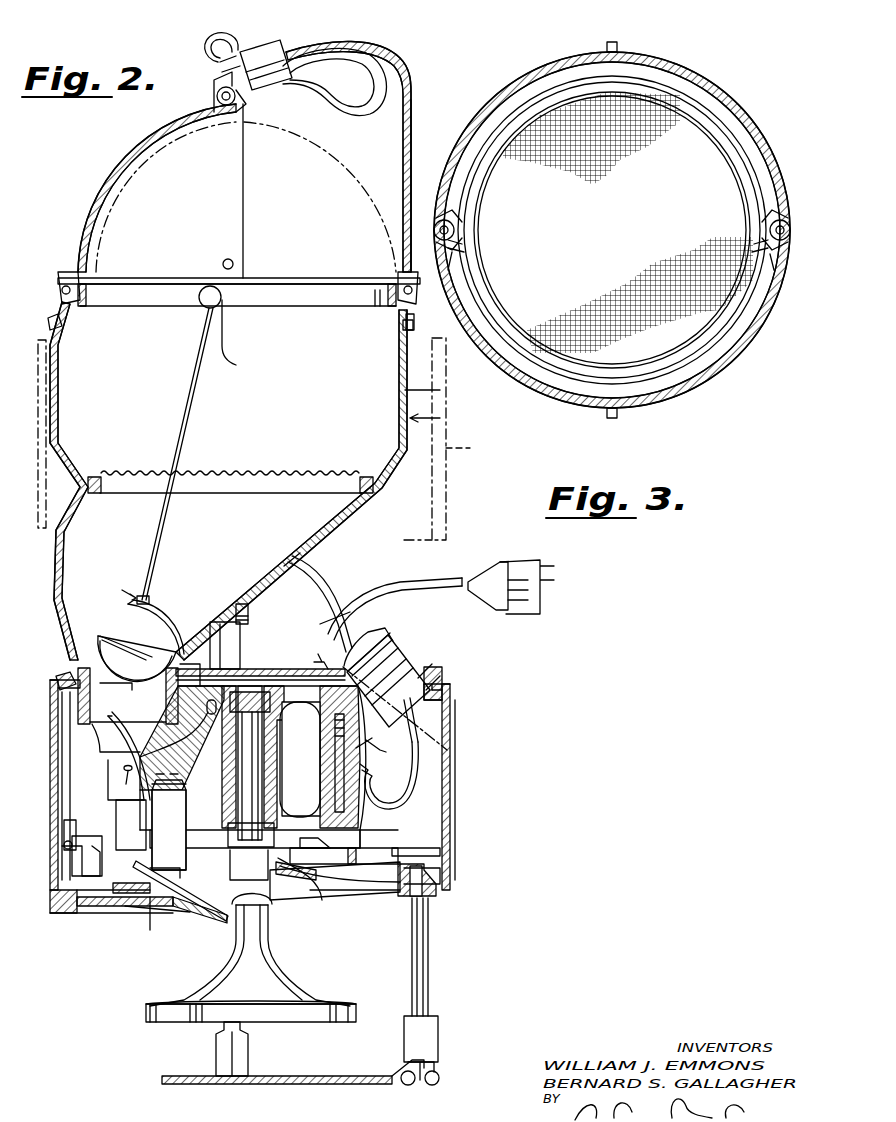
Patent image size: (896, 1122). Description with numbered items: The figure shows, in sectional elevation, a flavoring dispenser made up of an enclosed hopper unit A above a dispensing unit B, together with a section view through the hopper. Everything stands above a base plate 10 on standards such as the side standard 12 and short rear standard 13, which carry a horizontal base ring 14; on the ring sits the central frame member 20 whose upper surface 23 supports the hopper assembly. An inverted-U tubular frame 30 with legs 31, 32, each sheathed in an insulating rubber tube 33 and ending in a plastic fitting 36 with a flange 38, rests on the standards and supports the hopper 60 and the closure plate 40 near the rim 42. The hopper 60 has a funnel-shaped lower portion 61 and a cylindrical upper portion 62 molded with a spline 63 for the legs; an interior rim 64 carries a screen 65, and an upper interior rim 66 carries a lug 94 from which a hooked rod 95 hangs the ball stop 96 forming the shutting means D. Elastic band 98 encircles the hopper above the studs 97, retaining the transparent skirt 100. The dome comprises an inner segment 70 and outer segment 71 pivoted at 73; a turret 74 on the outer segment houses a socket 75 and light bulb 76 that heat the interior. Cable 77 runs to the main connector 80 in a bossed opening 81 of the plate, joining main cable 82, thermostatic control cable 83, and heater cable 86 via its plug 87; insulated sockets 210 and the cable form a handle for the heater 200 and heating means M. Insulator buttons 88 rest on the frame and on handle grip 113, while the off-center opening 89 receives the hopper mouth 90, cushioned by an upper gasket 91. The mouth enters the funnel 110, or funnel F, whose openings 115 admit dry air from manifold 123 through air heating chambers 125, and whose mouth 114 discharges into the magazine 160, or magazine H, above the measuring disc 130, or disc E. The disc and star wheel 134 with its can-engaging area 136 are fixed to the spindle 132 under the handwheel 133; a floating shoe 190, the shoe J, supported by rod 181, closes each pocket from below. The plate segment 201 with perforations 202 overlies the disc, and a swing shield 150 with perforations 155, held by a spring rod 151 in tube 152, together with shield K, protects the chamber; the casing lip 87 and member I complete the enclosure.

In FIG. 2, the base plate 10 is at (292, 1086).
In FIG. 2, the standard 12 is at (250, 1050).
In FIG. 2, the rear standard 13 is at (428, 988).
In FIG. 2, the base ring 14 is at (444, 888).
In FIG. 2, the central frame member 20 is at (330, 708).
In FIG. 2, the upper surface 23 is at (298, 672).
In FIG. 2, the tubular hopper frame 30 is at (216, 96).
In FIG. 3, the leg 31 is at (766, 222).
In FIG. 2, the leg 32 is at (250, 610).
In FIG. 3, the leg 32 is at (460, 230).
In FIG. 2, the insulating rubber tube 33 is at (250, 620).
In FIG. 3, the insulating rubber tube 33 is at (470, 246).
In FIG. 2, the plastic fitting 36 is at (242, 640).
In FIG. 2, the flange 38 is at (248, 670).
In FIG. 2, the closure plate 40 is at (420, 672).
In FIG. 2, the casing rim 42 is at (438, 684).
In FIG. 2, the hopper 60 is at (255, 439).
In FIG. 3, the hopper 60 is at (548, 60).
In FIG. 2, the funnel-shaped portion 61 is at (312, 548).
In FIG. 3, the funnel-shaped portion 61 is at (732, 86).
In FIG. 2, the cylindrical portion 62 is at (398, 364).
In FIG. 3, the recess or spline 63 is at (611, 265).
In FIG. 2, the rim 64 is at (96, 494).
In FIG. 3, the rim 64 is at (735, 150).
In FIG. 2, the screen 65 is at (282, 474).
In FIG. 3, the screen 65 is at (648, 215).
In FIG. 2, the upper interior rim 66 is at (338, 296).
In FIG. 2, the inner segment 70 is at (88, 184).
In FIG. 2, the outer segment 71 is at (412, 78).
In FIG. 2, the pivot 73 is at (234, 262).
In FIG. 2, the turret 74 is at (365, 45).
In FIG. 2, the electrical socket 75 is at (270, 48).
In FIG. 2, the light bulb 76 is at (348, 114).
In FIG. 2, the electric cable 77 is at (222, 34).
In FIG. 2, the main electrical connector 80 is at (394, 658).
In FIG. 2, the bossed opening 81 is at (380, 634).
In FIG. 2, the main cable 82 is at (420, 574).
In FIG. 2, the thermostatic control cable 83 is at (322, 630).
In FIG. 2, the heater cable 86 is at (446, 768).
In FIG. 2, the plug 87 is at (446, 712).
In FIG. 2, the insulator buttons 88 is at (328, 666).
In FIG. 2, the off-center opening 89 is at (92, 698).
In FIG. 2, the mouth 90 is at (116, 738).
In FIG. 2, the upper gasket 91 is at (66, 674).
In FIG. 2, the lug 94 is at (230, 296).
In FIG. 2, the hooked rod 95 is at (186, 384).
In FIG. 2, the ball stop 96 is at (166, 612).
In FIG. 2, the studs 97 is at (427, 324).
In FIG. 3, the studs 97 is at (618, 44).
In FIG. 2, the elastic band 98 is at (50, 322).
In FIG. 2, the skirt 100 is at (477, 448).
In FIG. 2, the funnel 110 is at (162, 758).
In FIG. 2, the handle grip 113 is at (334, 774).
In FIG. 2, the funnel mouth 114 is at (140, 834).
In FIG. 2, the openings 115 is at (127, 785).
In FIG. 2, the manifold 123 is at (236, 712).
In FIG. 2, the air heating chambers 125 is at (178, 812).
In FIG. 2, the measuring disc 130 is at (360, 880).
In FIG. 2, the spindle 132 is at (262, 762).
In FIG. 2, the handwheel 133 is at (306, 872).
In FIG. 2, the star wheel 134 is at (298, 980).
In FIG. 2, the area 136 is at (330, 1020).
In FIG. 2, the swing shield 150 is at (96, 918).
In FIG. 2, the spring mounted rod 151 is at (74, 914).
In FIG. 2, the tube 152 is at (66, 838).
In FIG. 2, the perforations 155 is at (132, 918).
In FIG. 2, the magazine 160 is at (83, 856).
In FIG. 2, the rod 181 is at (108, 900).
In FIG. 2, the shoe 190 is at (232, 890).
In FIG. 2, the heater 200 is at (344, 856).
In FIG. 2, the plate segment 201 is at (402, 858).
In FIG. 2, the perforations 202 is at (378, 850).
In FIG. 2, the insulated sockets 210 is at (376, 764).
In FIG. 2, the hopper unit A is at (438, 418).
In FIG. 2, the dispensing unit B is at (440, 818).
In FIG. 2, the means for shutting outlet D is at (112, 590).
In FIG. 2, the measuring disc E is at (440, 896).
In FIG. 2, the funnel F is at (136, 745).
In FIG. 2, the magazine H is at (134, 866).
In FIG. 2, the plate I is at (124, 924).
In FIG. 2, the floating shoe J is at (153, 917).
In FIG. 2, the shield K is at (366, 908).
In FIG. 2, the heating means M is at (354, 840).